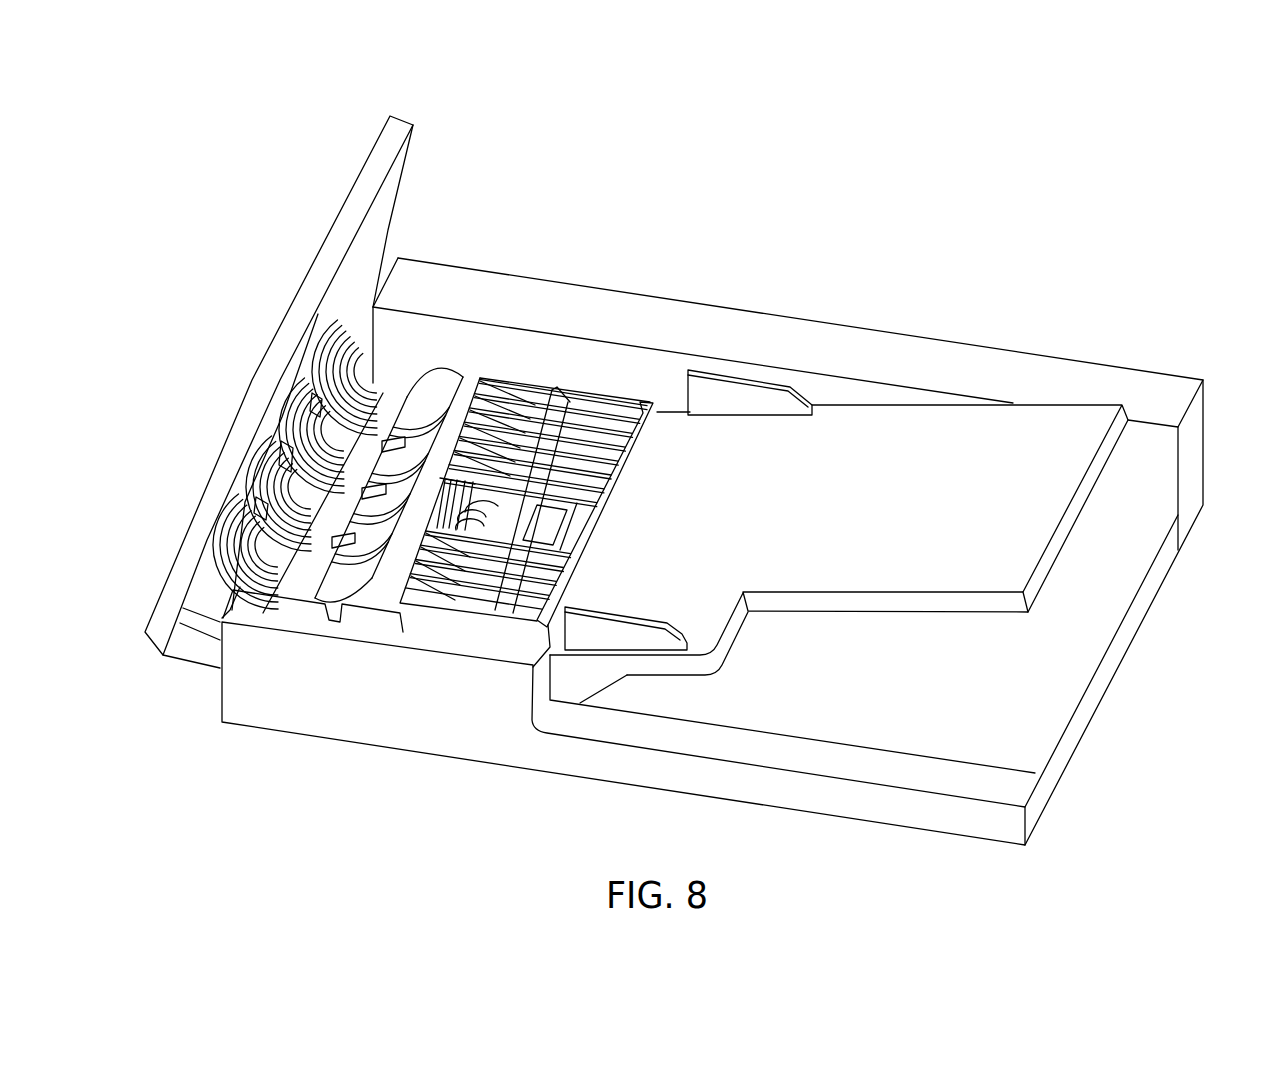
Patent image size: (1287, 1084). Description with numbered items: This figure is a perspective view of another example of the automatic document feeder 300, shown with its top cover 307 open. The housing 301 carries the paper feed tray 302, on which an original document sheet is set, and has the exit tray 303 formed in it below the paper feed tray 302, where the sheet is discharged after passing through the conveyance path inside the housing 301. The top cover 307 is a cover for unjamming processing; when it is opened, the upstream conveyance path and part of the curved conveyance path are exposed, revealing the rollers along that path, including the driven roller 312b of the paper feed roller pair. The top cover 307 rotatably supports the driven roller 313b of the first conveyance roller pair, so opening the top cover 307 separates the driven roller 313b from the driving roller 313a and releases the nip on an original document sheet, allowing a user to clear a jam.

The automatic document feeder 300 is at (1117, 175).
The housing 301 is at (863, 340).
The paper feed tray 302 is at (1047, 437).
The exit tray 303 is at (990, 717).
The top cover 307 is at (373, 162).
The driven roller 312b is at (480, 497).
The driving roller 313a is at (403, 440).
The driven roller 313b is at (403, 441).